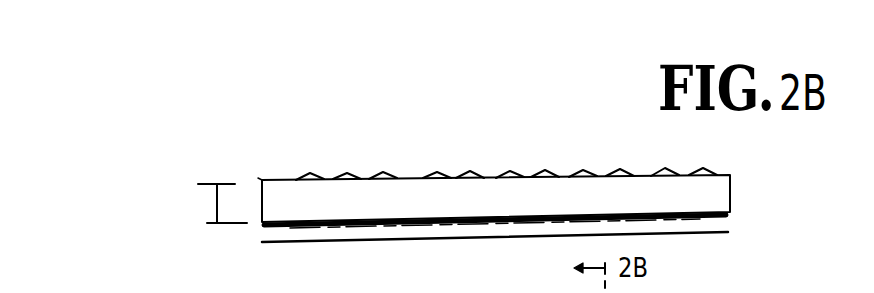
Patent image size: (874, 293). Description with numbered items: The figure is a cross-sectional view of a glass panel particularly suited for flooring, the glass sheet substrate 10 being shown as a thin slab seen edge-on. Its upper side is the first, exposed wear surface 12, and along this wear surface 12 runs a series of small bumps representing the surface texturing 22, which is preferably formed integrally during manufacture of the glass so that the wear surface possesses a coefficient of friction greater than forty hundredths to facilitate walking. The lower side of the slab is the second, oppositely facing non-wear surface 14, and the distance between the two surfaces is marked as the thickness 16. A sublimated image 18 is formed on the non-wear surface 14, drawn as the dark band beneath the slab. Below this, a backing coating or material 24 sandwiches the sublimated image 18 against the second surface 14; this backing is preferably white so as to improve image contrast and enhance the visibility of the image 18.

The glass sheet substrate 10 is at (234, 142).
The wear surface 12 is at (342, 158).
The non-wear surface 14 is at (265, 225).
The thickness 16 is at (205, 205).
The sublimated image 18 is at (535, 217).
The surface texturing 22 is at (432, 172).
The backing coating 24 is at (718, 228).